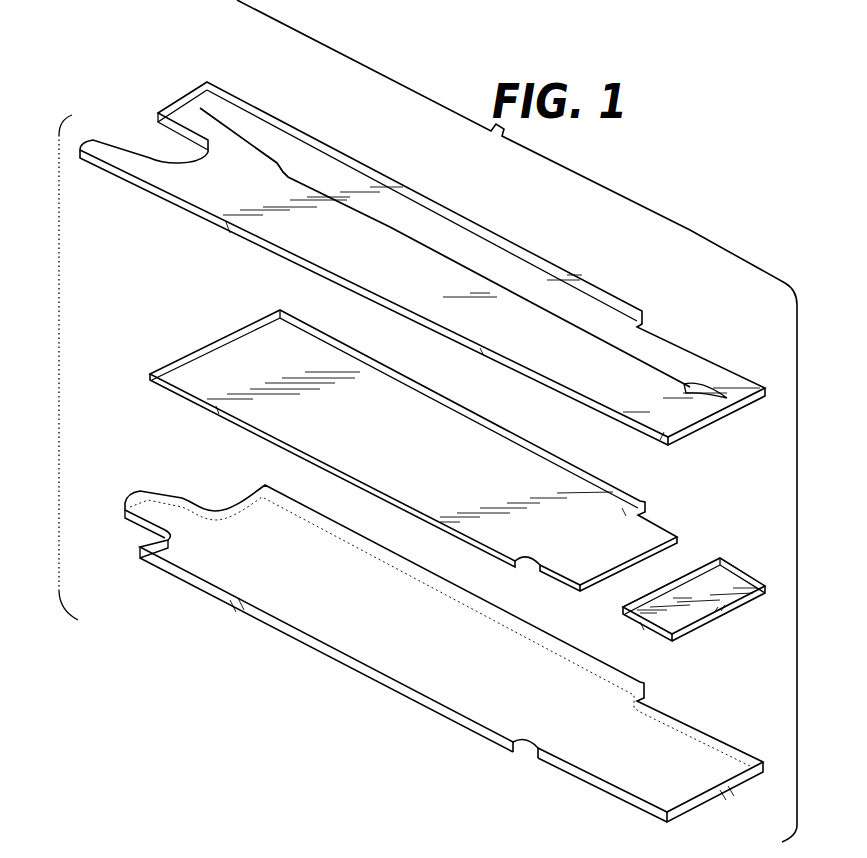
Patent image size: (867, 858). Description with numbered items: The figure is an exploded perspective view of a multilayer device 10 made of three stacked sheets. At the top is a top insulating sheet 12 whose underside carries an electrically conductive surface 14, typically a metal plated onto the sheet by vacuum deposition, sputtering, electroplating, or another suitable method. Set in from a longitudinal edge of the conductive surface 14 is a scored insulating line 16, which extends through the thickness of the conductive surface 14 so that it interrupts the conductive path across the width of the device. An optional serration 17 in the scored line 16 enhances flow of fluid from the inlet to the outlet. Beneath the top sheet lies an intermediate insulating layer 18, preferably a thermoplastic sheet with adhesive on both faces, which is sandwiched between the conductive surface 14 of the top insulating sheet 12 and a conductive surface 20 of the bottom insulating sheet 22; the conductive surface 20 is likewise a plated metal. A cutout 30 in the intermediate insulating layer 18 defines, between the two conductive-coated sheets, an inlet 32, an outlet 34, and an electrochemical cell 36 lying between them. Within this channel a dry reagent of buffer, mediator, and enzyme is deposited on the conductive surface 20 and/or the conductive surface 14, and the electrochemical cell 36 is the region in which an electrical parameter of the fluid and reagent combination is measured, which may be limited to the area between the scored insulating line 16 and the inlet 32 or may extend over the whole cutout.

The multilayer device 10 is at (59, 336).
The top insulating sheet 12 is at (237, 118).
The electrically conductive surface 14 is at (254, 247).
The scored insulating line 16 is at (497, 285).
The serration 17 is at (687, 392).
The intermediate insulating layer 18 is at (153, 341).
The conductive surface 20 is at (263, 512).
The bottom insulating sheet 22 is at (175, 573).
The cutout 30 is at (697, 545).
The inlet 32 is at (603, 601).
The outlet 34 is at (707, 552).
The electrochemical cell 36 is at (663, 582).